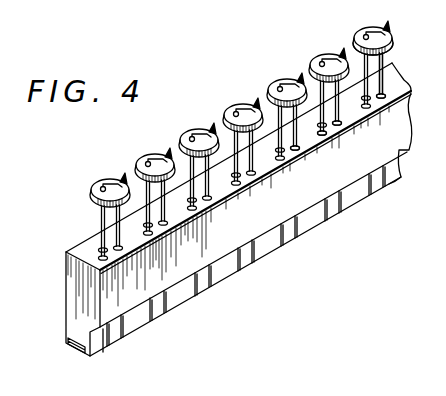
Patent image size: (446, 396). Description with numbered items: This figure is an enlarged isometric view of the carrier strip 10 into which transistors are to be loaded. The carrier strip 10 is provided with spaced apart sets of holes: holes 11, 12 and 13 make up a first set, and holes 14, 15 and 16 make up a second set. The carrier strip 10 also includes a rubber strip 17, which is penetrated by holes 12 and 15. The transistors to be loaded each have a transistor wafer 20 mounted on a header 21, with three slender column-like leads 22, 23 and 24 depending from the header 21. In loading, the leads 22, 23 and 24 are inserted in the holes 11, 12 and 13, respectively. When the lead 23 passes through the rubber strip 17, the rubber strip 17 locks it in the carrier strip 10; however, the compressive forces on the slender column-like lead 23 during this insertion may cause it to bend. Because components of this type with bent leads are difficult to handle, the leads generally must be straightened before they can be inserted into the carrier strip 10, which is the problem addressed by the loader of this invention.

The carrier strip 10 is at (232, 238).
The hole 11 is at (389, 100).
The hole 12 is at (387, 94).
The hole 13 is at (391, 115).
The hole 14 is at (344, 125).
The hole 15 is at (297, 152).
The hole 16 is at (323, 136).
The rubber strip 17 is at (73, 348).
The transistor wafer 20 is at (376, 28).
The header 21 is at (392, 42).
The lead 22 is at (386, 175).
The lead 23 is at (384, 64).
The lead 24 is at (372, 190).